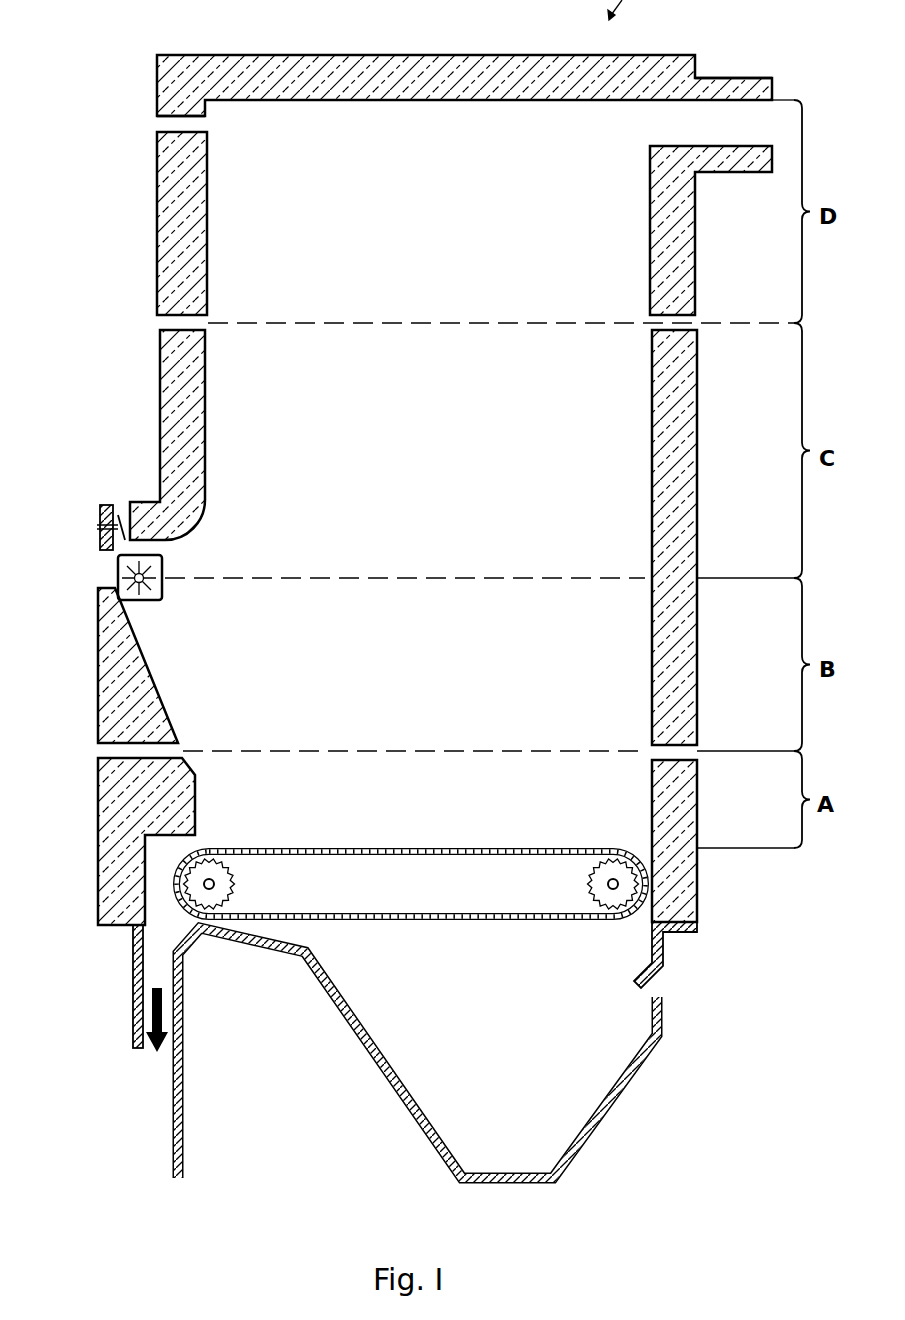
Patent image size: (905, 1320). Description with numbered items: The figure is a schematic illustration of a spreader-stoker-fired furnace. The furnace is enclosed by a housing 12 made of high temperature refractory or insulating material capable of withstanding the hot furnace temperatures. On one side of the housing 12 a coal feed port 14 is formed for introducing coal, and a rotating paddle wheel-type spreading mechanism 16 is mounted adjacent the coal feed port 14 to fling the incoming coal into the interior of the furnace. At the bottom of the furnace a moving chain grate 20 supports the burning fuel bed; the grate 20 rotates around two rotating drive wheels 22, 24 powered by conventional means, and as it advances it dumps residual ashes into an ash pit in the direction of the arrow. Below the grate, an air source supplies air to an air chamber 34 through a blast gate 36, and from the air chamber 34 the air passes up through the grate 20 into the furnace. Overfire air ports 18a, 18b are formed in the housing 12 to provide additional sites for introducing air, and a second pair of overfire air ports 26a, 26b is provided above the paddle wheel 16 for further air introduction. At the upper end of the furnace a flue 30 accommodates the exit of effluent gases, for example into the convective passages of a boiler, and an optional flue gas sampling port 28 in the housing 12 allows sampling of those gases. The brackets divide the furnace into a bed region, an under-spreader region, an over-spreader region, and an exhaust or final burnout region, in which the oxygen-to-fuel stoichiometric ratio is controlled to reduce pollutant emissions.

The housing 12 is at (285, 58).
The coal feed port 14 is at (125, 505).
The spreading mechanism 16 is at (118, 566).
The overfire air port 18a is at (98, 747).
The overfire air port 18b is at (697, 748).
The moving chain grate 20 is at (500, 848).
The rotating drive wheel 22 is at (588, 885).
The rotating drive wheel 24 is at (222, 890).
The overfire air port 26a is at (160, 323).
The overfire air port 26b is at (697, 320).
The flue gas sampling port 28 is at (157, 118).
The flue 30 is at (727, 80).
The air chamber 34 is at (516, 1128).
The blast gate 36 is at (655, 983).